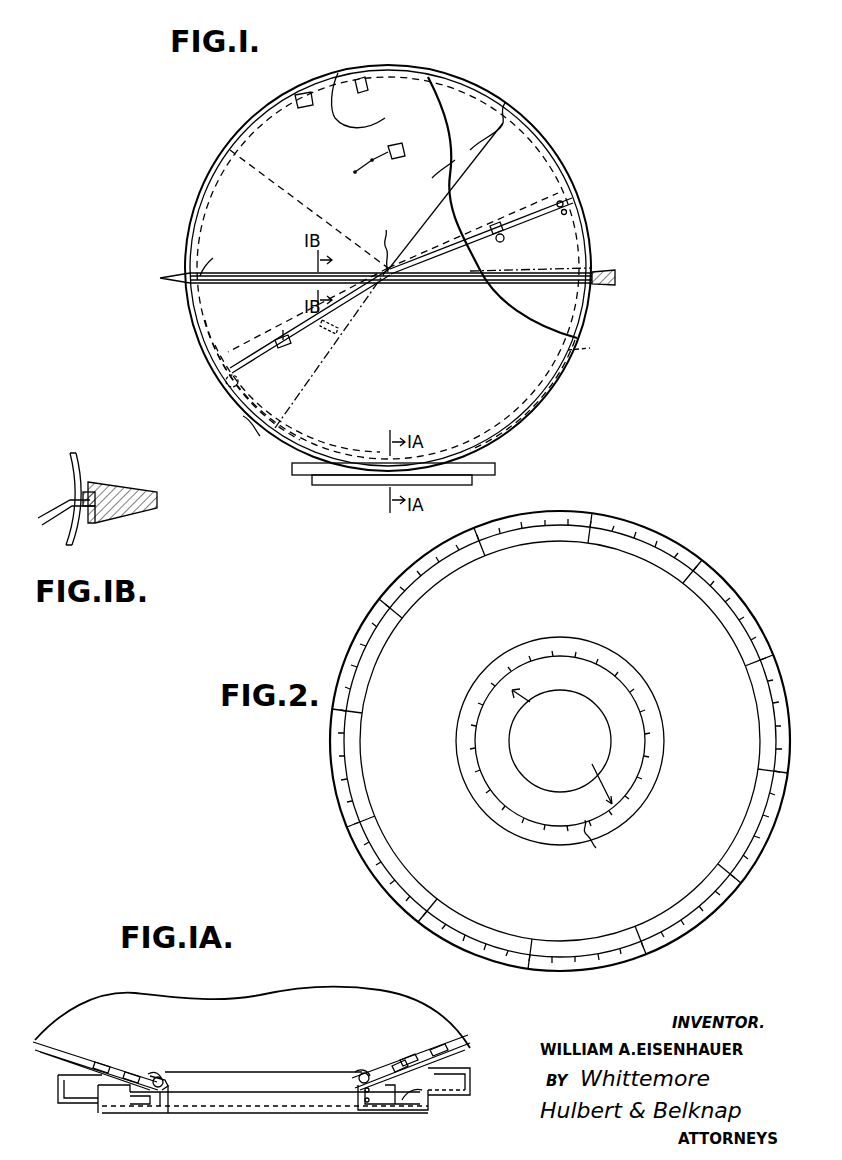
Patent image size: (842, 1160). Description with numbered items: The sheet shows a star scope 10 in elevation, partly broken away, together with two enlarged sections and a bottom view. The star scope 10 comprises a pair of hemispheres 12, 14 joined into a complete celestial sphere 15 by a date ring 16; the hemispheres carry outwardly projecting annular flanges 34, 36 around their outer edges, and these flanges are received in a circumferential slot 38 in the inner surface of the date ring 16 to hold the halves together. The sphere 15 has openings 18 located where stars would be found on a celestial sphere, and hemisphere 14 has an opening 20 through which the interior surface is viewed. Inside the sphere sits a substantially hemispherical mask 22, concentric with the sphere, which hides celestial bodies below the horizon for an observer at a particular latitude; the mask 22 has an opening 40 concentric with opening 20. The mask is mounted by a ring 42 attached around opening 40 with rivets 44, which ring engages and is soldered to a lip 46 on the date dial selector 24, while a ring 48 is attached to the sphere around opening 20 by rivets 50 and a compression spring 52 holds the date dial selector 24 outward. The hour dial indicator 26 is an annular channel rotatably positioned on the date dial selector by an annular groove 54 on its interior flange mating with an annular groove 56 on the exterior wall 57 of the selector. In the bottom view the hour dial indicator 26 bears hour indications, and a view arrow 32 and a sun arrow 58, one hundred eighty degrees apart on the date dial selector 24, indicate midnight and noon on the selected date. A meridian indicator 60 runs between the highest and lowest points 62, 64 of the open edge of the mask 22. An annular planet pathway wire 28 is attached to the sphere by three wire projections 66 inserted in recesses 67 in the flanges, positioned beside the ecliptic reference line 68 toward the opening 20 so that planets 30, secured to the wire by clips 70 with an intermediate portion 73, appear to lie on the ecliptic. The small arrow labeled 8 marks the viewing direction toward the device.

In FIG. 1, the viewing direction arrow 8 is at (95, 370).
In FIG. 1, the star scope 10 is at (604, 202).
In FIG. 1, the hemisphere 12 is at (468, 84).
In FIG. 1, the hemisphere 14 is at (203, 376).
In FIG. 2, the hemisphere 14 is at (604, 598).
In FIG. 1A, the hemisphere 14 is at (466, 1048).
In FIG. 1, the celestial sphere 15 is at (558, 397).
In FIG. 2, the celestial sphere 15 is at (682, 564).
In FIG. 1, the date ring 16 is at (602, 270).
In FIG. 1B, the date ring 16 is at (140, 510).
In FIG. 2, the date ring 16 is at (370, 622).
In FIG. 1, the openings 18 is at (400, 143).
In FIG. 2, the opening 20 is at (512, 752).
In FIG. 1A, the opening 20 is at (215, 1098).
In FIG. 1, the mask 22 is at (577, 358).
In FIG. 1A, the mask 22 is at (74, 1040).
In FIG. 1, the date dial selector 24 is at (450, 484).
In FIG. 2, the date dial selector 24 is at (596, 846).
In FIG. 1A, the date dial selector 24 is at (432, 1108).
In FIG. 1, the hour dial indicator 26 is at (496, 466).
In FIG. 2, the hour dial indicator 26 is at (662, 764).
In FIG. 1A, the hour dial indicator 26 is at (470, 1082).
In FIG. 1, the planet pathway wire 28 is at (433, 283).
In FIG. 1, the planet representations 30 is at (284, 328).
In FIG. 2, the view arrow 32 is at (516, 695).
In FIG. 1B, the annular flange 34 is at (87, 490).
In FIG. 1B, the annular flange 36 is at (90, 520).
In FIG. 1, the circumferential slot 38 is at (185, 276).
In FIG. 1B, the circumferential slot 38 is at (102, 496).
In FIG. 1A, the opening 40 is at (138, 1076).
In FIG. 1A, the ring 42 is at (370, 1072).
In FIG. 1A, the rivets 44 is at (416, 1044).
In FIG. 1A, the lip 46 is at (168, 1082).
In FIG. 1A, the ring 48 is at (132, 1108).
In FIG. 1A, the rivets 50 is at (392, 1106).
In FIG. 1A, the compression spring 52 is at (362, 1108).
In FIG. 1A, the annular groove 54 is at (458, 1094).
In FIG. 1A, the annular groove 56 is at (412, 1110).
In FIG. 1A, the exterior wall 57 is at (100, 1104).
In FIG. 2, the sun arrow 58 is at (592, 784).
In FIG. 1, the meridian indicator 60 is at (492, 137).
In FIG. 1, the highest point 62 is at (505, 103).
In FIG. 1, the lowest point 64 is at (250, 428).
In FIG. 1, the wire projections 66 is at (395, 289).
In FIG. 1B, the wire projections 66 is at (44, 515).
In FIG. 1B, the recesses 67 is at (70, 510).
In FIG. 1, the ecliptic reference line 68 is at (497, 216).
In FIG. 1, the clip 70 is at (288, 348).
In FIG. 1, the intermediate portion 73 is at (240, 382).